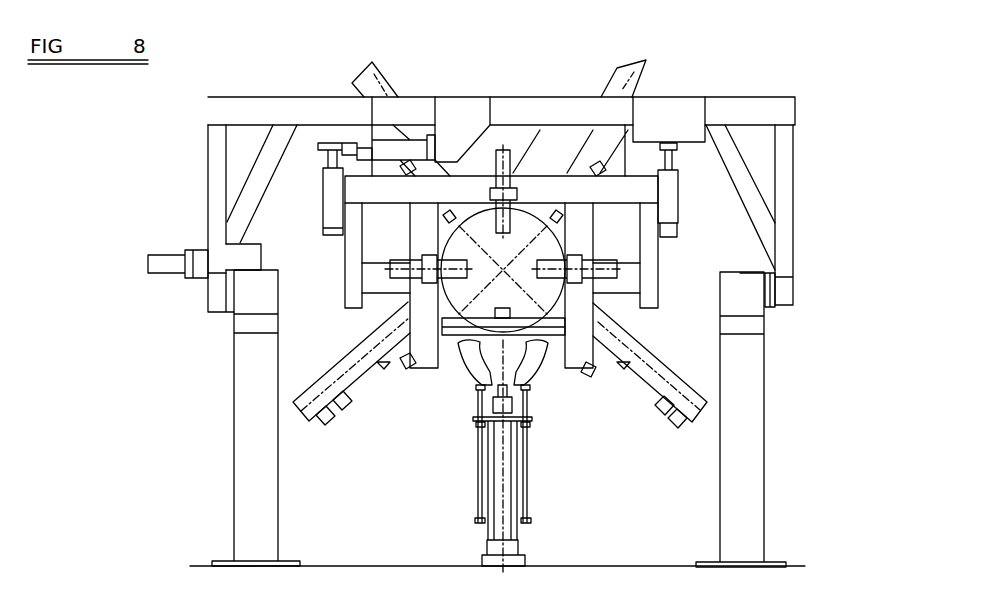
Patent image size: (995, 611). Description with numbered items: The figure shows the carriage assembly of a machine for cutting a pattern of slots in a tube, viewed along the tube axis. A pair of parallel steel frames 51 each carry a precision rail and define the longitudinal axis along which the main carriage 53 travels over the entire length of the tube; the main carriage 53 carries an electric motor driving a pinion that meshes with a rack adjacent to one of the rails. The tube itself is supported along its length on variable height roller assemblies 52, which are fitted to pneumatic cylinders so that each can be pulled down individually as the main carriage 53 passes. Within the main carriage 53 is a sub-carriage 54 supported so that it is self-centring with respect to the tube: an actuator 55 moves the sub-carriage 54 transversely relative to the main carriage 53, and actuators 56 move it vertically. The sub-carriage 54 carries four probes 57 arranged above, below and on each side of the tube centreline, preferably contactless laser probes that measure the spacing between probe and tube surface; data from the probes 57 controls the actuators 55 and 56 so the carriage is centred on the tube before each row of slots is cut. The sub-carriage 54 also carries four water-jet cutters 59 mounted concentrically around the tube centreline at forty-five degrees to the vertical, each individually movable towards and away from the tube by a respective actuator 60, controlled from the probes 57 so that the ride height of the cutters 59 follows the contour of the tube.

The parallel steel frames 51 is at (243, 420).
The variable height roller assembly 52 is at (536, 487).
The main carriage 53 is at (776, 94).
The sub-carriage 54 is at (666, 287).
The actuator 55 is at (410, 143).
The actuators 56 is at (323, 206).
The probes 57 is at (508, 290).
The water-jet cutters 59 is at (410, 162).
The actuators 60 is at (380, 78).